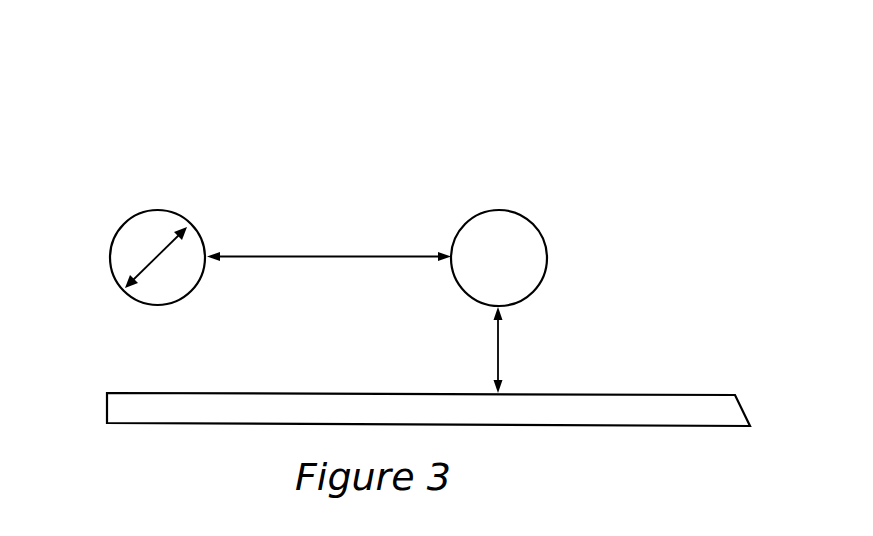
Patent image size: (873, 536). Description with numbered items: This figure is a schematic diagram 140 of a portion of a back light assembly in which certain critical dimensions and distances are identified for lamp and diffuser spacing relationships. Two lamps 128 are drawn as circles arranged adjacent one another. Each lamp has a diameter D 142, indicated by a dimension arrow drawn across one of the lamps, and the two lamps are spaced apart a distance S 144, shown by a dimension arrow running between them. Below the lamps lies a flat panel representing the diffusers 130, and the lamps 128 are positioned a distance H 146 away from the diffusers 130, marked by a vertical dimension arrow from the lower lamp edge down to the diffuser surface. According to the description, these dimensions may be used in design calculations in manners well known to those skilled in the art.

The lamps 128 is at (160, 209).
The diffusers 130 is at (743, 407).
The schematic diagram 140 is at (626, 105).
The diameter D 142 is at (153, 255).
The distance S 144 is at (397, 256).
The distance H 146 is at (498, 370).